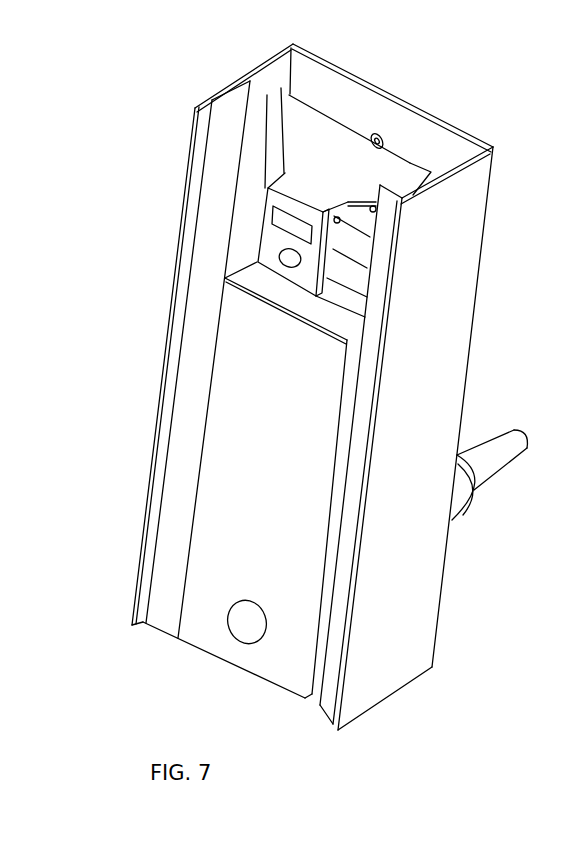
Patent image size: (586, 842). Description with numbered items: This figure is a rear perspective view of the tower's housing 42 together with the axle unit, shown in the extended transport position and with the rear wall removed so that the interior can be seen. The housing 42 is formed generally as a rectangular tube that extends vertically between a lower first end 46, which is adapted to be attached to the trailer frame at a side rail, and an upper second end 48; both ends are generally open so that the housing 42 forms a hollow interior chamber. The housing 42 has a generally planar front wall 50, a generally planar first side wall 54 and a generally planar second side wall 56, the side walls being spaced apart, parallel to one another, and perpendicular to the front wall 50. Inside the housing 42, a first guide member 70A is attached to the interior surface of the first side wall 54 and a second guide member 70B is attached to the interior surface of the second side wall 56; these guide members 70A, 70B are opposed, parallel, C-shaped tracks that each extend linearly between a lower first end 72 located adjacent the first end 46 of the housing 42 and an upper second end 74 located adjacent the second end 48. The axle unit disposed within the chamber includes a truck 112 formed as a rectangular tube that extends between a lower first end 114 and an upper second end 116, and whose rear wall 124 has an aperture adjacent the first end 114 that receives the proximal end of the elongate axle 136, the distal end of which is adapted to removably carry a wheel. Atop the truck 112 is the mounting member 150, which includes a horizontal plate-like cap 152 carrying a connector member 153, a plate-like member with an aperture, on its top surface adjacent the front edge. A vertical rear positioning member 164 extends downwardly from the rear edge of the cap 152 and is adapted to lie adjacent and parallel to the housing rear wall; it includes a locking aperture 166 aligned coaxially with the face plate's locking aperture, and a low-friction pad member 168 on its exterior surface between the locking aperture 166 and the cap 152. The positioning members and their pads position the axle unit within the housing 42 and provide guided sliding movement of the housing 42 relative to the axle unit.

The housing 42 is at (484, 302).
The lower first end 46 is at (392, 693).
The upper second end 48 is at (292, 47).
The front wall 50 is at (325, 52).
The first side wall 54 is at (448, 372).
The second side wall 56 is at (178, 268).
The first guide member 70A is at (378, 318).
The second guide member 70B is at (207, 197).
The lower first end 72 is at (160, 630).
The upper second end 74 is at (412, 166).
The truck 112 is at (228, 460).
The lower first end 114 is at (212, 655).
The upper second end 116 is at (250, 293).
The rear wall 124 is at (310, 444).
The axle 136 is at (500, 484).
The mounting member 150 is at (447, 162).
The cap 152 is at (330, 137).
The connector member 153 is at (405, 148).
The rear positioning member 164 is at (327, 243).
The locking aperture 166 is at (300, 266).
The low-friction pad member 168 is at (283, 220).